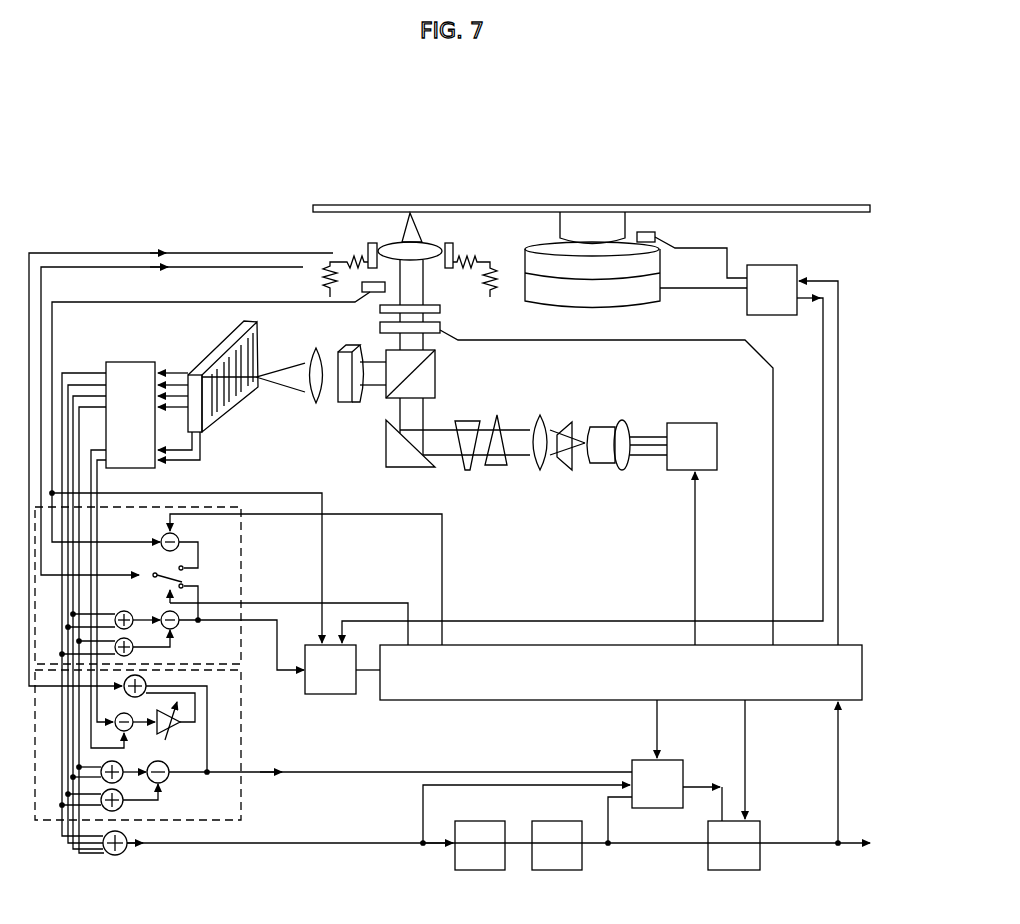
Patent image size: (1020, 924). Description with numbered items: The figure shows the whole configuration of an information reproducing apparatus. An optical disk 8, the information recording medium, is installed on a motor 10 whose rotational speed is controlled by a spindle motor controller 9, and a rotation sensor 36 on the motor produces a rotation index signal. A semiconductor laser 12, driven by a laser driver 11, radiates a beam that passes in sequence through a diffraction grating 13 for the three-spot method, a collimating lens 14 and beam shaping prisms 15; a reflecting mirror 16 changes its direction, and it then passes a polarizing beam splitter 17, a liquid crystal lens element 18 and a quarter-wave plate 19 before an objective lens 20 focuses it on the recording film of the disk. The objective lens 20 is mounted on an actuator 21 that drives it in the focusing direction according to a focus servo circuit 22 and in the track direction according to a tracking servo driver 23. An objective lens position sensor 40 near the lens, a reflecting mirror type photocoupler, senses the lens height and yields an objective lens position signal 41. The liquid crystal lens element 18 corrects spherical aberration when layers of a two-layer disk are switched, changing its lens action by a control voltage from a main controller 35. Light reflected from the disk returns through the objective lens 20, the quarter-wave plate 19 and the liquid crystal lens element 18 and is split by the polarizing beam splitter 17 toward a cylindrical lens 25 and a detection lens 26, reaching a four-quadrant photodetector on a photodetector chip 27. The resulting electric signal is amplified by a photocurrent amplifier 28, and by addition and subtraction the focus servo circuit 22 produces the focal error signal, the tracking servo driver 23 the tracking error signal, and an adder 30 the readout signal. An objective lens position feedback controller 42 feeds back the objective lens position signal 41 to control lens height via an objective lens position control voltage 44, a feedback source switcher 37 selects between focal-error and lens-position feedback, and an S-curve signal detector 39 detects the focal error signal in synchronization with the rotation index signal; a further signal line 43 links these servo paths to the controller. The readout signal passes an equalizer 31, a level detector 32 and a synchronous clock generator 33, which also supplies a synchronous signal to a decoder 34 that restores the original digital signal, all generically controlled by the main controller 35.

The optical disk 8 is at (591, 225).
The spindle motor controller 9 is at (590, 455).
The motor 10 is at (636, 260).
The laser driver 11 is at (692, 534).
The semiconductor laser 12 is at (627, 457).
The diffraction grating 13 is at (571, 432).
The collimating lens 14 is at (555, 458).
The beam shaping prisms 15 is at (481, 456).
The reflecting mirror 16 is at (440, 446).
The polarizing beam splitter 17 is at (414, 402).
The liquid crystal lens element 18 is at (606, 487).
The quarter-wave plate 19 is at (440, 309).
The objective lens 20 is at (410, 281).
The actuator 21 is at (410, 277).
The focus servo circuit 22 is at (169, 588).
The tracking servo driver 23 is at (333, 745).
The cylindrical lens 25 is at (352, 387).
The detection lens 26 is at (317, 389).
The photodetector chip 27 is at (231, 390).
The photocurrent amplifier 28 is at (108, 607).
The adder 30 is at (486, 853).
The equalizer 31 is at (464, 845).
The level detector 32 is at (557, 845).
The synchronous clock generator 33 is at (571, 772).
The decoder 34 is at (734, 785).
The main controller 35 is at (621, 745).
The rotation sensor 36 is at (692, 249).
The feedback source switcher 37 is at (182, 626).
The S-curve signal detector 39 is at (342, 669).
The objective lens position sensor 40 is at (218, 412).
The objective lens position signal 41 is at (186, 556).
The objective lens position feedback controller 42 is at (164, 542).
The signal line 43 is at (289, 610).
The objective lens position control voltage 44 is at (306, 579).